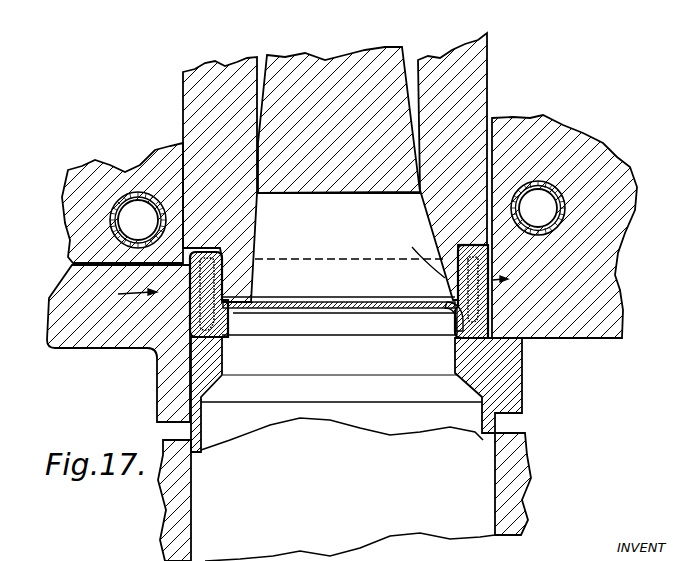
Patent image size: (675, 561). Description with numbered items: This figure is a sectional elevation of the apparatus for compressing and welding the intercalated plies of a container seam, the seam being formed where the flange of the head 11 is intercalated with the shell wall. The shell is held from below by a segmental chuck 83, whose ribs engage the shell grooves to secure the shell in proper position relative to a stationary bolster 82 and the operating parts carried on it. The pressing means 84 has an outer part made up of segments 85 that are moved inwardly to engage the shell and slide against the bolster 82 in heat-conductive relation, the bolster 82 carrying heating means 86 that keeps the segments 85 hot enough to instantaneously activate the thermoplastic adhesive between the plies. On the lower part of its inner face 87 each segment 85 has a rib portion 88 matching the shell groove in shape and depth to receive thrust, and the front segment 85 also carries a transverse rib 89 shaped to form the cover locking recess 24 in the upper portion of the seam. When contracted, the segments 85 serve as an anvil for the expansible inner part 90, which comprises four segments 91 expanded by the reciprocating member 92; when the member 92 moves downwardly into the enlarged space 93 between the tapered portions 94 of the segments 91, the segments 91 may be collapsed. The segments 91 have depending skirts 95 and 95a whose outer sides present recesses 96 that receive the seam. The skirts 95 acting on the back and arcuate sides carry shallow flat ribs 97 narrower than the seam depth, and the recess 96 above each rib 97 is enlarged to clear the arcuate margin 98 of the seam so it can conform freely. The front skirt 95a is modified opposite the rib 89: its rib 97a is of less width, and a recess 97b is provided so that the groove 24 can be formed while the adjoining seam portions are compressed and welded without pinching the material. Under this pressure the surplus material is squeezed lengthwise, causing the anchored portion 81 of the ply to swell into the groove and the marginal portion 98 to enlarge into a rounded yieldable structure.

The flanged head 11 is at (348, 434).
The cover locking recess 24 is at (192, 283).
The anchored portion of ply 81 is at (452, 333).
The stationary bolster 82 is at (607, 163).
The segmental chuck 83 is at (515, 456).
The pressing means 84 is at (438, 238).
The segment 85 is at (74, 313).
The heating means 86 is at (137, 192).
The inner face of segment 87 is at (523, 342).
The rib portion 88 is at (208, 365).
The transverse rib 89 is at (137, 350).
The inner part of pressing means 90 is at (466, 96).
The inner segment 91 is at (218, 70).
The reciprocating member 92 is at (330, 63).
The enlarged space 93 is at (352, 310).
The tapered portion 94 is at (255, 222).
The depending skirt 95 is at (443, 287).
The front depending skirt 95a is at (240, 274).
The recess 96 is at (467, 219).
The flat rib 97 is at (490, 262).
The front skirt rib 97a is at (236, 264).
The recess on front skirt 97b is at (268, 310).
The marginal portion of seam 98 is at (205, 252).